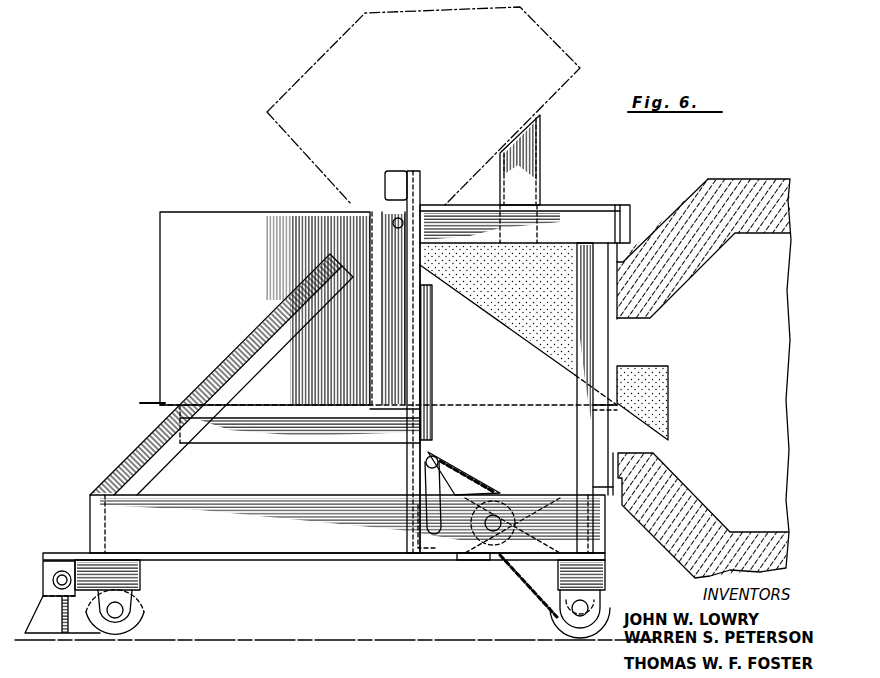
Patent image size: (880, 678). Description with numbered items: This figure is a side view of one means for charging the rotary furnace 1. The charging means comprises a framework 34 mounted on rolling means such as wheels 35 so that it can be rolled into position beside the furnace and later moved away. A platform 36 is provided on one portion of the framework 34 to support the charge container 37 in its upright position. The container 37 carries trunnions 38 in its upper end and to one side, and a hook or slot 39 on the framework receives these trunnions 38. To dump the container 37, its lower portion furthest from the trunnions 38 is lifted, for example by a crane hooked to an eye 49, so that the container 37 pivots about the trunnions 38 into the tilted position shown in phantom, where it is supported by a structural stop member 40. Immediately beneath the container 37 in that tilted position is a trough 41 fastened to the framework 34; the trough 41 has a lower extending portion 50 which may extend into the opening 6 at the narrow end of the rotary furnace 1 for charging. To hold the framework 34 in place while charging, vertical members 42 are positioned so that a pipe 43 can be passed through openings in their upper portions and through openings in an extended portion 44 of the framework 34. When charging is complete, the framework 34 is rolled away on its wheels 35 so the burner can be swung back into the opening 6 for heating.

The rotary furnace 1 is at (763, 178).
The opening 6 is at (647, 338).
The framework 34 is at (590, 207).
The wheels 35 is at (137, 622).
The platform 36 is at (272, 437).
The charge container 37 is at (288, 84).
The trunnions 38 is at (394, 222).
The hook or slot 39 is at (396, 218).
The structural stop member 40 is at (541, 180).
The trough 41 is at (560, 365).
The vertical members 42 is at (47, 632).
The pipe 43 is at (64, 575).
The extended portion 44 is at (50, 556).
The eye 49 is at (148, 398).
The lower extending portion 50 is at (668, 425).